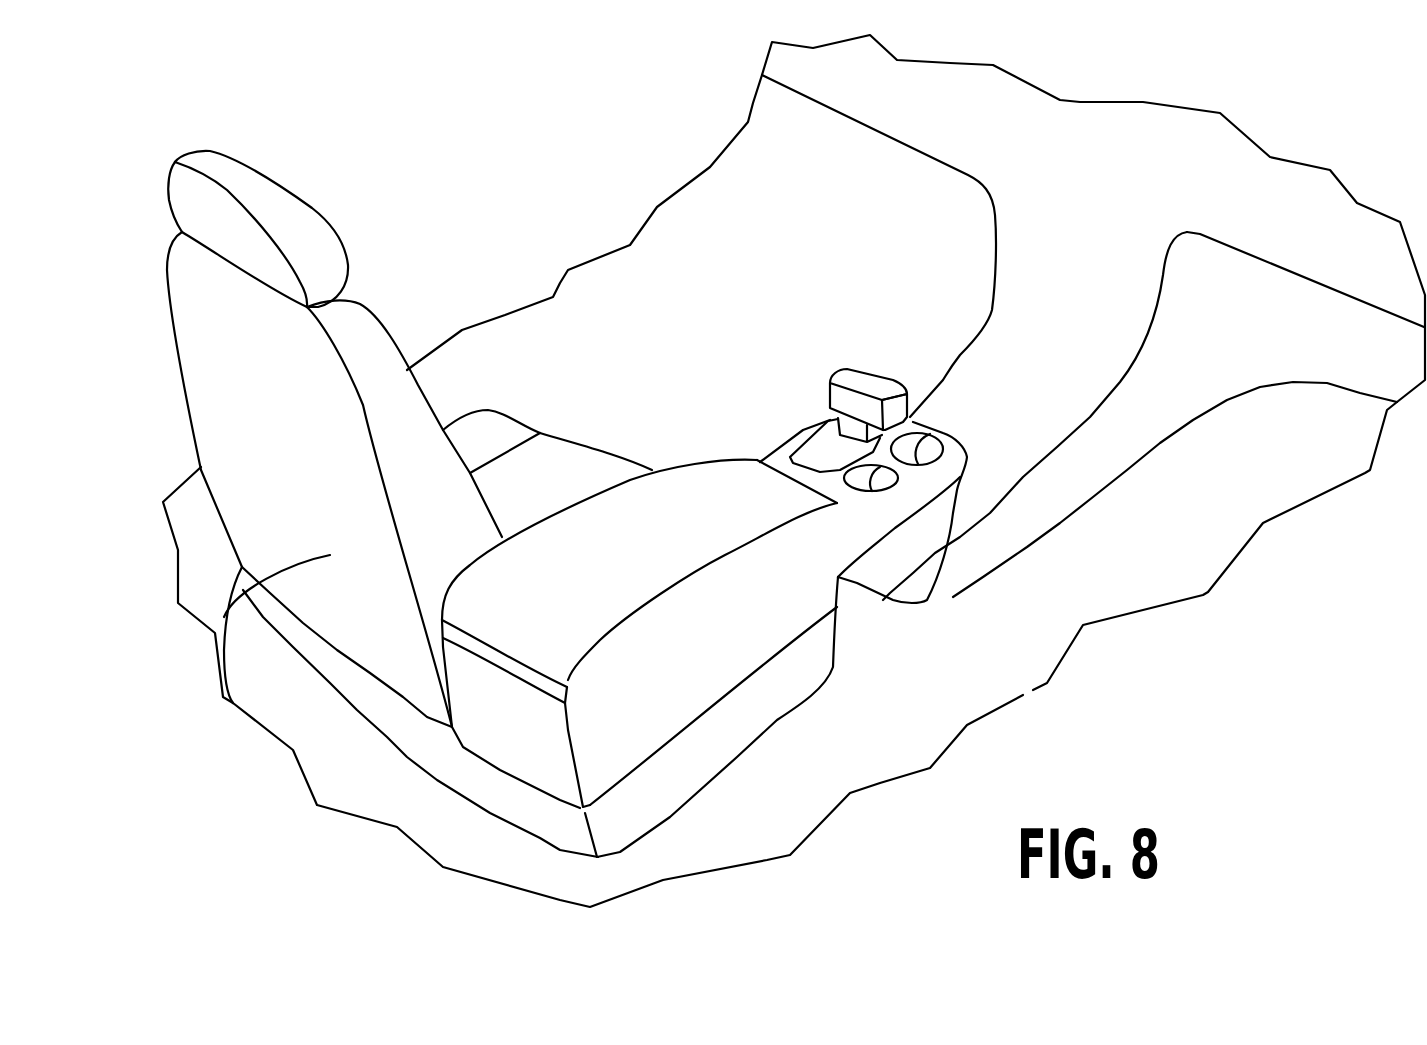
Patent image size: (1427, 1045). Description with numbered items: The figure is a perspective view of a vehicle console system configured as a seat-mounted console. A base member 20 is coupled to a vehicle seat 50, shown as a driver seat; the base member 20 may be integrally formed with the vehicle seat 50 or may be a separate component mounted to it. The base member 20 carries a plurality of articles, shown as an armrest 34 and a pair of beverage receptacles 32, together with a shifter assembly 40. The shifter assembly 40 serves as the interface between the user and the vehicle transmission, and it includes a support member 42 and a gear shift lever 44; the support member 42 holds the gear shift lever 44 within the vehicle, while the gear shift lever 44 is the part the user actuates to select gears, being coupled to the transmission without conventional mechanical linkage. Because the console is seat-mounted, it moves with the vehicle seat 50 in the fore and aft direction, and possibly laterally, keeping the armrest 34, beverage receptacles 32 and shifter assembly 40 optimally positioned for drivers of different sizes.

The base member 20 is at (700, 677).
The beverage receptacles 32 is at (897, 476).
The armrest 34 is at (622, 520).
The shifter assembly 40 is at (811, 367).
The support member 42 is at (820, 450).
The gear shift lever 44 is at (858, 385).
The vehicle seat 50 is at (233, 698).